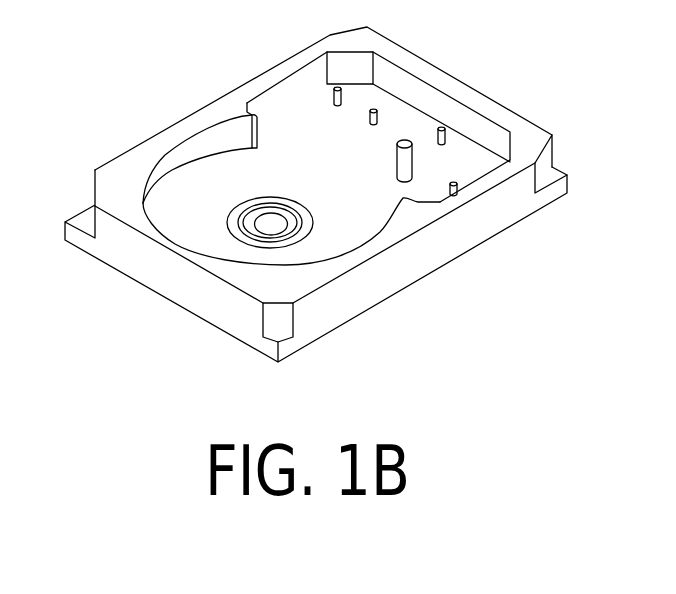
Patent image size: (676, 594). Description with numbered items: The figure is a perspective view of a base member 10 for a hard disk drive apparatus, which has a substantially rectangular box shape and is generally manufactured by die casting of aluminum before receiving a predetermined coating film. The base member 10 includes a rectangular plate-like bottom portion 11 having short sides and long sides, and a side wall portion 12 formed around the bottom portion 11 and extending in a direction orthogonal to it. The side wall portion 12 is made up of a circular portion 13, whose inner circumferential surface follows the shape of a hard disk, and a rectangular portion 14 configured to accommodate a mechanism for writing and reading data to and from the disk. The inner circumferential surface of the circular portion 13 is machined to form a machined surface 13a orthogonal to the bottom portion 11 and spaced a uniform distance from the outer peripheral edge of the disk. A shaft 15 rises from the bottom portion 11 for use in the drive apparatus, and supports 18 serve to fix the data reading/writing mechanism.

The base member 10 is at (108, 108).
The bottom portion 11 is at (393, 113).
The side wall portion 12 is at (233, 110).
The circular portion 13 is at (175, 160).
The machined surface 13a is at (153, 175).
The rectangular portion 14 is at (290, 92).
The shaft 15 is at (396, 163).
The supports 18 is at (370, 117).